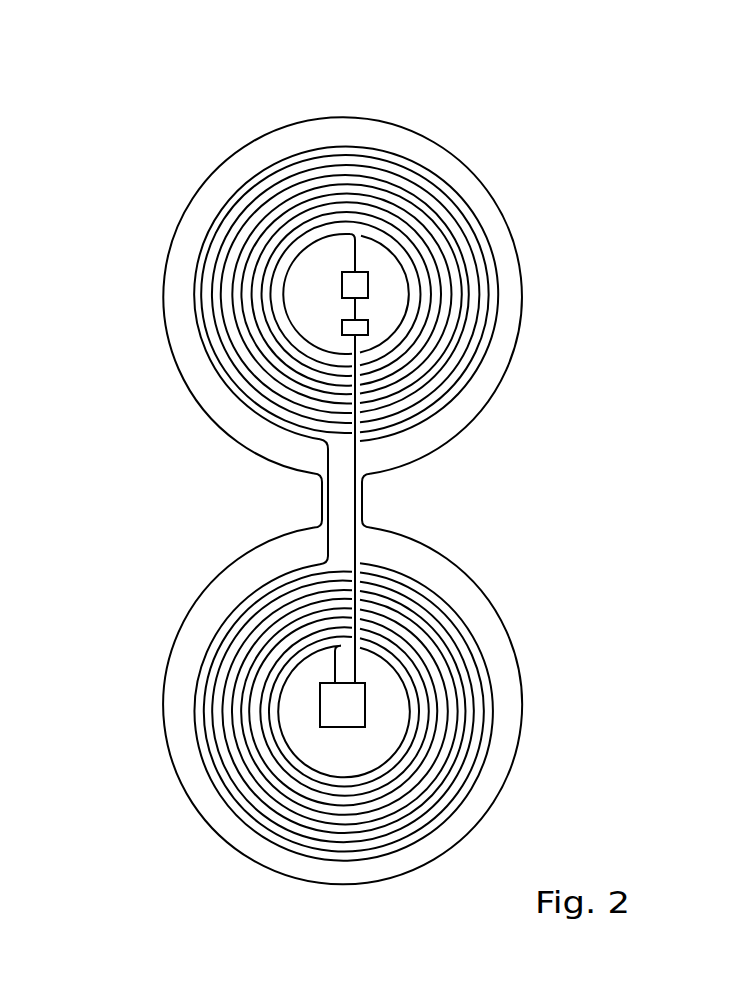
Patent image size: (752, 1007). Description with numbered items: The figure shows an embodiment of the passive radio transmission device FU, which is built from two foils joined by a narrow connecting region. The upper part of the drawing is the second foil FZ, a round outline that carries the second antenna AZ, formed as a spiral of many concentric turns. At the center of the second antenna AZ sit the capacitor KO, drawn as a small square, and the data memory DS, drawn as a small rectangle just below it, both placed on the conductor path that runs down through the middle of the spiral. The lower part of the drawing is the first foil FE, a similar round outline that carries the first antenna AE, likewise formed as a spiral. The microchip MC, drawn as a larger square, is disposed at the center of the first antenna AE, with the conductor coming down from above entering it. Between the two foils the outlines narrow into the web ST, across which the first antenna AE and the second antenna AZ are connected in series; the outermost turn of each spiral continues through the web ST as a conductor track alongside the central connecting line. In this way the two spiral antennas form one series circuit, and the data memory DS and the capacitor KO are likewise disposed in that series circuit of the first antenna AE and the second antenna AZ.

The passive radio transmission device FU is at (551, 110).
The second antenna AZ is at (423, 173).
The data memory DS is at (350, 327).
The capacitor KO is at (360, 285).
The second foil FZ is at (480, 383).
The web ST is at (345, 502).
The first foil FE is at (450, 585).
The microchip MC is at (342, 705).
The first antenna AE is at (487, 657).